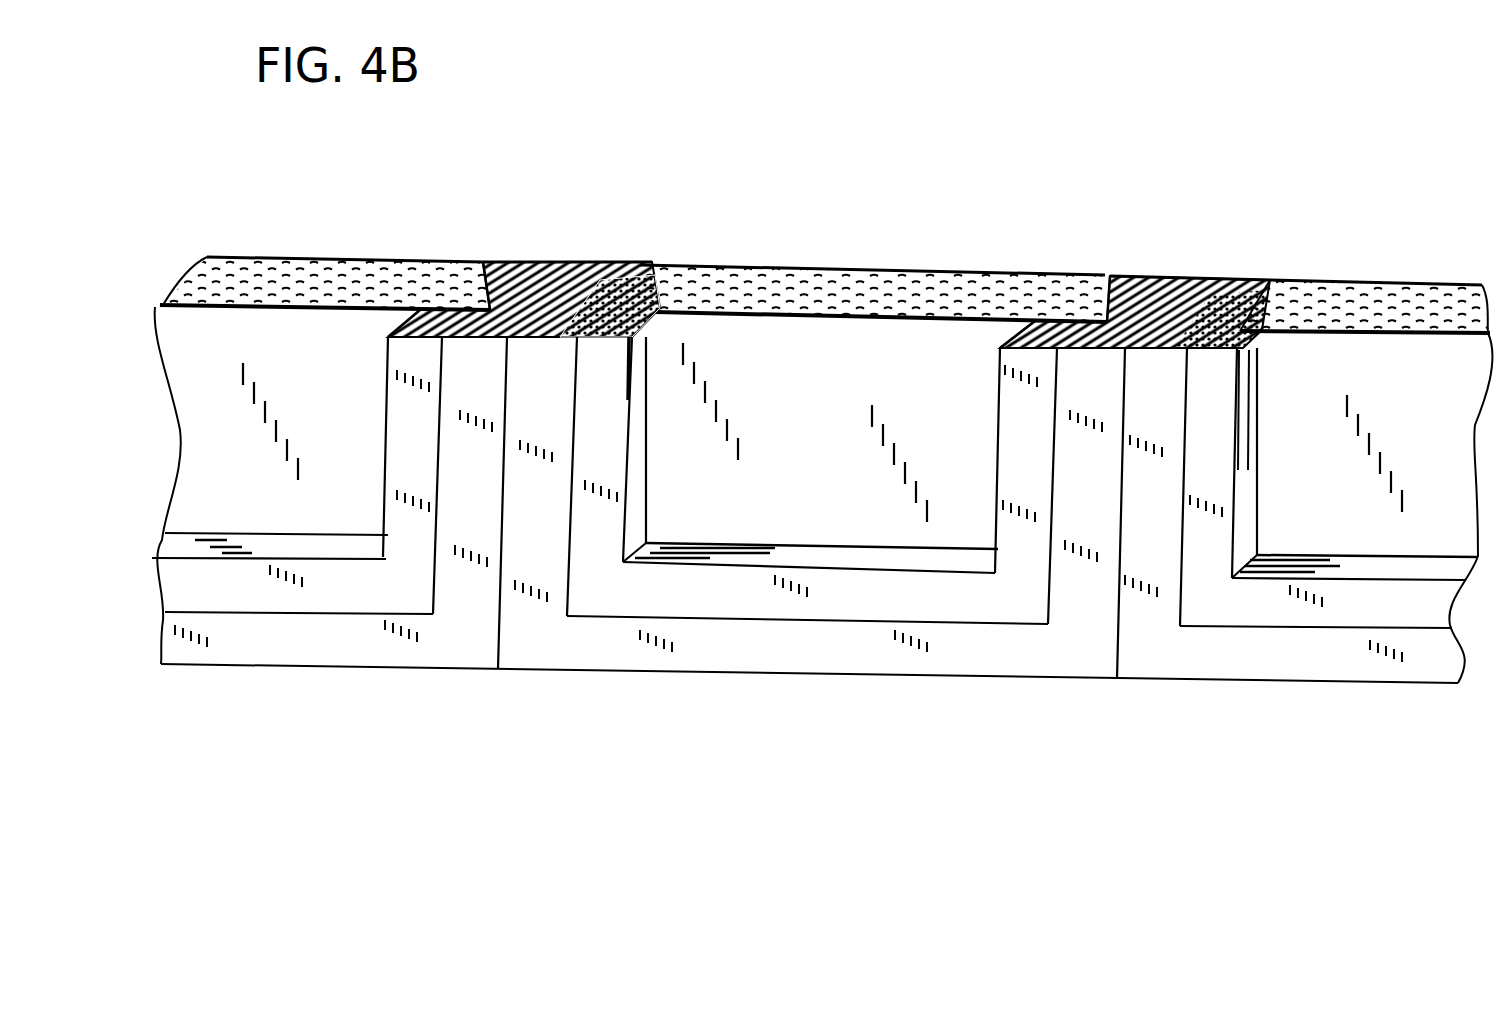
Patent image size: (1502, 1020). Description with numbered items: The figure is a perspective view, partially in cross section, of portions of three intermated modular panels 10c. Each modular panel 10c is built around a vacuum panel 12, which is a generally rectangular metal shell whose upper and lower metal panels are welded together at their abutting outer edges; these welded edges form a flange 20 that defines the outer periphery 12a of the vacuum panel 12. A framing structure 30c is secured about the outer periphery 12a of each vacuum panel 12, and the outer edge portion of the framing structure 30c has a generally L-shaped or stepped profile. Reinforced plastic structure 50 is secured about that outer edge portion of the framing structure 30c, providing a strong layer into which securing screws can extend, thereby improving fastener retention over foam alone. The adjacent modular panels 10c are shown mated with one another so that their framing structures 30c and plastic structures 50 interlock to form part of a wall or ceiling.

The modular panel 10c is at (418, 224).
The vacuum panel 12 is at (338, 247).
The outer periphery 12a is at (542, 263).
The flange 20 is at (508, 263).
The reinforced plastic structure 50 is at (573, 265).
The framing structure 30c is at (338, 590).